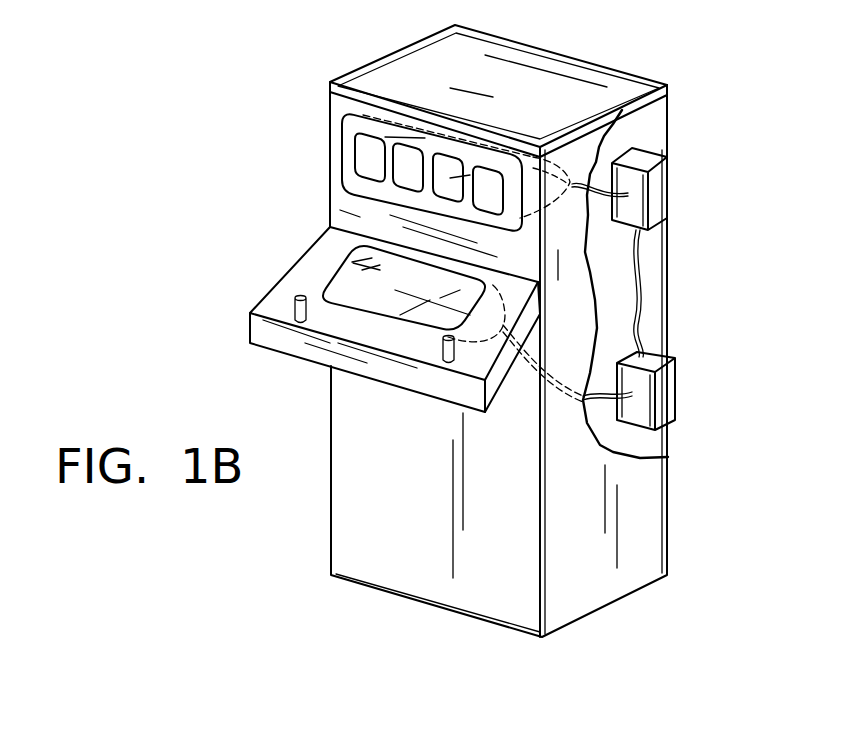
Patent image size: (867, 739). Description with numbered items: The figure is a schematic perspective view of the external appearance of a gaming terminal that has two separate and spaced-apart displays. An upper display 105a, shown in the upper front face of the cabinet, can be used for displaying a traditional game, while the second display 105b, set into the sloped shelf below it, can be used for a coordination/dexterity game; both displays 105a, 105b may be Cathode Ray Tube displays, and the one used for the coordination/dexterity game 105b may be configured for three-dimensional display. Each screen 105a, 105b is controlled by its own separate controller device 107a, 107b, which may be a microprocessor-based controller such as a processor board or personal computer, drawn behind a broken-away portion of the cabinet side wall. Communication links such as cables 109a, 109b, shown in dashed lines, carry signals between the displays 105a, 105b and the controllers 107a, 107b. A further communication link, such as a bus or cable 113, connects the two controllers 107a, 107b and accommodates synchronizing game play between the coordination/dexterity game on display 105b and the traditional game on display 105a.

The upper display 105a is at (355, 175).
The second display 105b is at (343, 283).
The controller device 107a is at (657, 203).
The controller device 107b is at (662, 390).
The cable 109a is at (575, 180).
The cable 109b is at (580, 400).
The bus or cable 113 is at (638, 270).